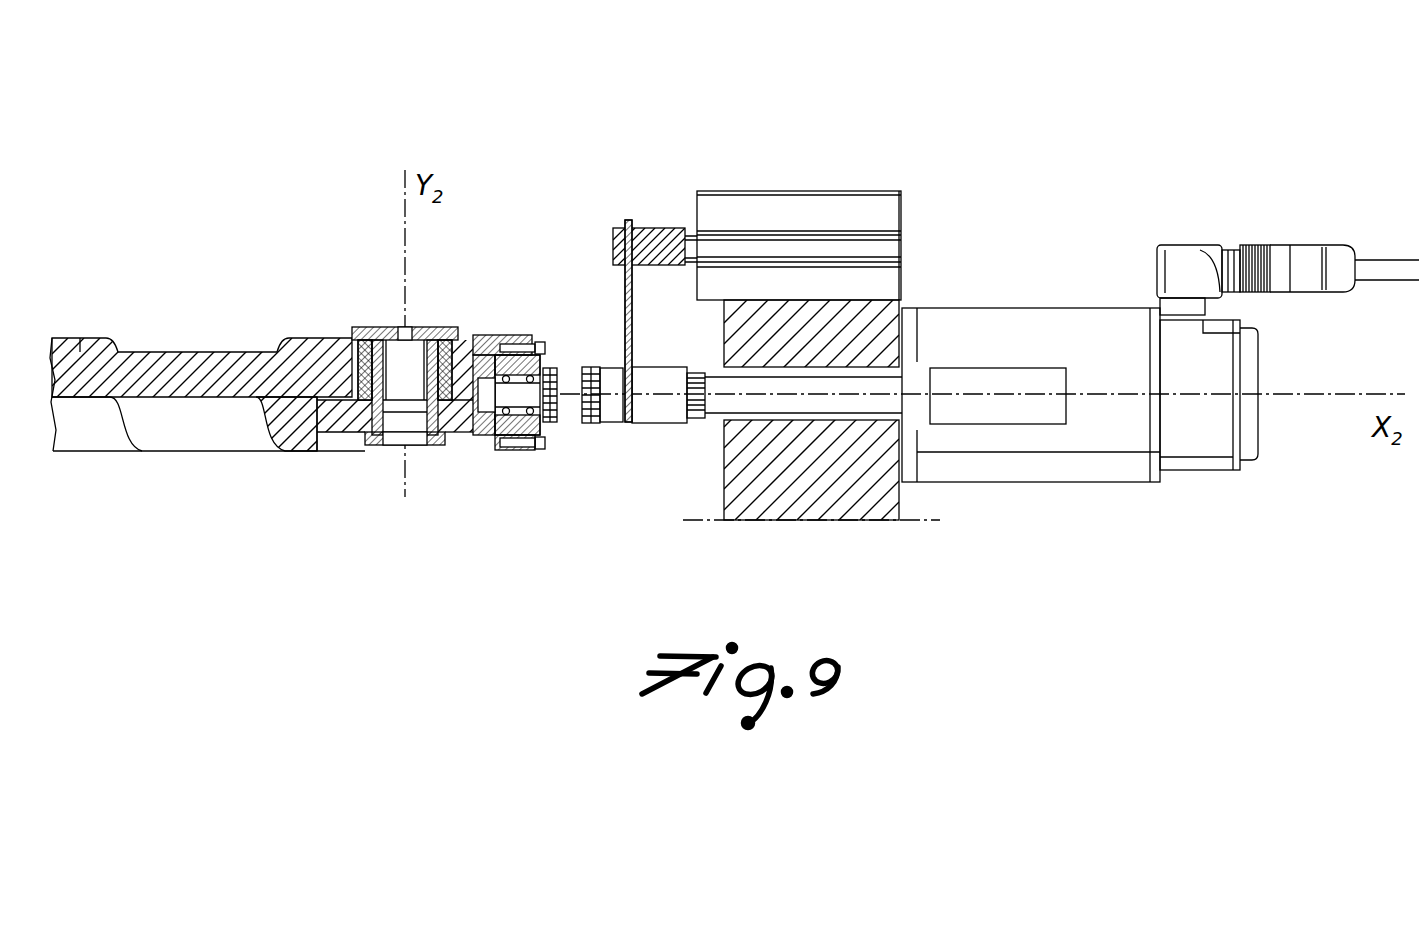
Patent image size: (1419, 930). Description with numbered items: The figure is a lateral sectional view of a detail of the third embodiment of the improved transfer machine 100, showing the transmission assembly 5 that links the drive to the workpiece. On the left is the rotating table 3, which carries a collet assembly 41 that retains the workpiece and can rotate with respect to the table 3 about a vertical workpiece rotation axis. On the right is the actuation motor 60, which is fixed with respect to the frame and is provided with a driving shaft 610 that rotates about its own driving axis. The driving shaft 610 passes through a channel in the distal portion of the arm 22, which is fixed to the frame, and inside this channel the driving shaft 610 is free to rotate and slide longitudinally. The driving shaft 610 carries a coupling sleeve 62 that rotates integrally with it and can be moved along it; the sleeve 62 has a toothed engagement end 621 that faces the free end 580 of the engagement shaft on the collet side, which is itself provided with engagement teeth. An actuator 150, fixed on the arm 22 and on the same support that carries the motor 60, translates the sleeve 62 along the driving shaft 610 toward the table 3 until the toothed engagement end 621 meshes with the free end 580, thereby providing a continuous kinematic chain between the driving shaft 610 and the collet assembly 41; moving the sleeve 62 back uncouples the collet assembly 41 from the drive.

The transfer machine 100 is at (1008, 127).
The table 3 is at (150, 460).
The collet assembly 41 is at (392, 325).
The transmission assembly 5 is at (531, 312).
The free end 580 is at (566, 428).
The toothed engagement end 621 is at (578, 387).
The coupling sleeve 62 is at (610, 412).
The driving shaft 610 is at (835, 405).
The arm 22 is at (778, 468).
The actuator 150 is at (773, 218).
The actuation motor 60 is at (1097, 355).